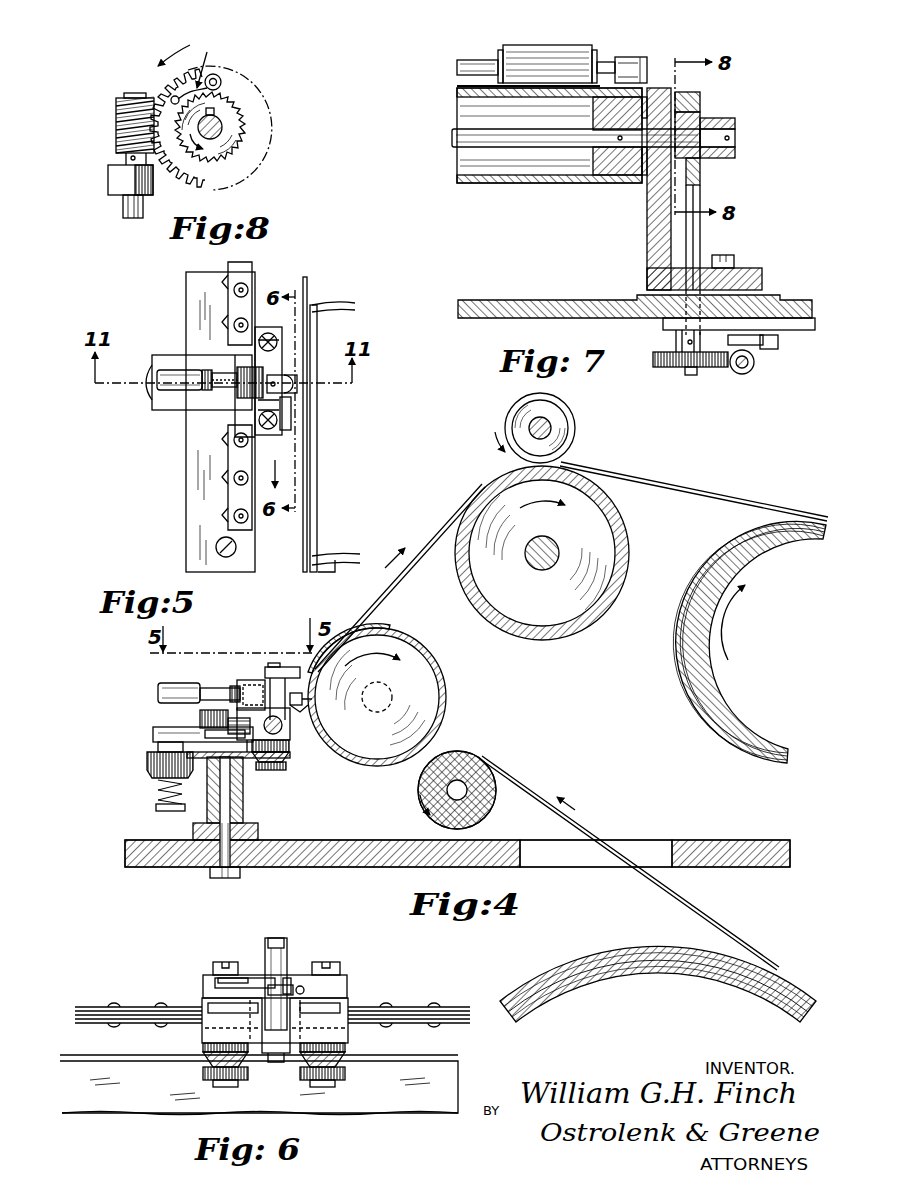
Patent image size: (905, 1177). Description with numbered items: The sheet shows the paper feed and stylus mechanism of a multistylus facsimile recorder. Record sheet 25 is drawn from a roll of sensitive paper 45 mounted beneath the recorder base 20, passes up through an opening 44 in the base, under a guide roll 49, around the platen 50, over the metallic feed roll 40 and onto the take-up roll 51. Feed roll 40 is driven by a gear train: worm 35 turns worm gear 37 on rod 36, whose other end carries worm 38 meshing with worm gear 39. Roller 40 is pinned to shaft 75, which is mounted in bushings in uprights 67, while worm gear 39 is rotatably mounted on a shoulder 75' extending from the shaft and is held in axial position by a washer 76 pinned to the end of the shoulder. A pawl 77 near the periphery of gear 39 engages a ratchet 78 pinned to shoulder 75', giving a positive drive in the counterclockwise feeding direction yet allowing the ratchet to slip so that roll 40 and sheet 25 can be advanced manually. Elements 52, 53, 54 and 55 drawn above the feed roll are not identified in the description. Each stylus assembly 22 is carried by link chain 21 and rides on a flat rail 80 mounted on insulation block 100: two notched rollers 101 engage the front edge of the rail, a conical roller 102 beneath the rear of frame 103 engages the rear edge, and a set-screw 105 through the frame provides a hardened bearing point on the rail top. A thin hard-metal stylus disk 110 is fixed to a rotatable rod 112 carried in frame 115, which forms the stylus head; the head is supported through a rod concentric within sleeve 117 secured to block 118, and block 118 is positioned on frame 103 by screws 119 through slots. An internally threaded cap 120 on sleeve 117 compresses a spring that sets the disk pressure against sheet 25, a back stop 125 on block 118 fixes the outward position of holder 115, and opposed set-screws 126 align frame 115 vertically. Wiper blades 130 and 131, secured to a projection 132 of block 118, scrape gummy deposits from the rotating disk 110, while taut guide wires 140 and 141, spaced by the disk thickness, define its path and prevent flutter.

In FIG. 7, the recorder base 20 is at (540, 312).
In FIG. 4, the recorder base 20 is at (703, 862).
In FIG. 5, the link chain 21 is at (248, 300).
In FIG. 4, the link chain 21 is at (232, 725).
In FIG. 6, the link chain 21 is at (110, 1007).
In FIG. 5, the stylus assembly 22 is at (185, 352).
In FIG. 4, the stylus assembly 22 is at (152, 721).
In FIG. 6, the stylus assembly 22 is at (352, 975).
In FIG. 7, the record sheet 25 is at (470, 89).
In FIG. 5, the record sheet 25 is at (338, 322).
In FIG. 4, the record sheet 25 is at (414, 539).
In FIG. 7, the worm 35 is at (754, 369).
In FIG. 8, the rod 36 is at (124, 209).
In FIG. 7, the rod 36 is at (700, 233).
In FIG. 7, the worm gear 37 is at (714, 367).
In FIG. 8, the worm 38 is at (118, 107).
In FIG. 8, the worm gear 39 is at (165, 83).
In FIG. 7, the worm gear 39 is at (700, 108).
In FIG. 7, the feed roll 40 is at (548, 184).
In FIG. 4, the feed roll 40 is at (622, 541).
In FIG. 4, the opening 44 is at (563, 858).
In FIG. 4, the roll of sensitive paper 45 is at (606, 957).
In FIG. 4, the guide roll 49 is at (480, 808).
In FIG. 5, the platen 50 is at (330, 574).
In FIG. 4, the platen 50 is at (437, 673).
In FIG. 4, the take-up roll 51 is at (712, 705).
In FIG. 7, the pressure roller 52 is at (548, 47).
In FIG. 4, the pressure roller 52 is at (507, 415).
In FIG. 4, the roller shaft 53 is at (552, 430).
In FIG. 7, the roller shaft 54 is at (606, 62).
In FIG. 7, the roller support block 55 is at (640, 63).
In FIG. 7, the uprights 67 is at (647, 228).
In FIG. 7, the shaft 75 is at (561, 126).
In FIG. 7, the shoulder 75' is at (736, 127).
In FIG. 7, the washer 76 is at (734, 154).
In FIG. 8, the pawl 77 is at (189, 69).
In FIG. 7, the pawl 77 is at (684, 96).
In FIG. 8, the ratchet 78 is at (232, 118).
In FIG. 7, the ratchet 78 is at (700, 172).
In FIG. 5, the rail 80 is at (200, 472).
In FIG. 4, the rail 80 is at (247, 760).
In FIG. 6, the rail 80 is at (452, 1054).
In FIG. 4, the insulation block 100 is at (207, 802).
In FIG. 6, the insulation block 100 is at (340, 1110).
In FIG. 4, the notched rollers 101 is at (290, 758).
In FIG. 6, the notched rollers 101 is at (203, 1073).
In FIG. 5, the conical roller 102 is at (150, 384).
In FIG. 4, the conical roller 102 is at (147, 762).
In FIG. 5, the frame 103 is at (167, 404).
In FIG. 4, the frame 103 is at (153, 734).
In FIG. 5, the set-screw 105 is at (210, 392).
In FIG. 4, the set-screw 105 is at (205, 721).
In FIG. 6, the set-screw 105 is at (276, 1062).
In FIG. 5, the stylus disk 110 is at (297, 378).
In FIG. 6, the stylus disk 110 is at (292, 988).
In FIG. 6, the stylus support rod 112 is at (270, 955).
In FIG. 6, the stylus head frame 115 is at (287, 980).
In FIG. 5, the sleeve 117 is at (218, 373).
In FIG. 4, the sleeve 117 is at (222, 688).
In FIG. 5, the block 118 is at (244, 390).
In FIG. 6, the block 118 is at (340, 1004).
In FIG. 5, the screws 119 is at (277, 342).
In FIG. 6, the screws 119 is at (218, 962).
In FIG. 5, the threaded cap 120 is at (172, 372).
In FIG. 4, the threaded cap 120 is at (190, 683).
In FIG. 6, the back stop 125 is at (304, 988).
In FIG. 6, the set-screws 126 is at (206, 1033).
In FIG. 5, the wiper blade 130 is at (292, 405).
In FIG. 6, the wiper blade 130 is at (260, 978).
In FIG. 6, the wiper blade 131 is at (215, 1005).
In FIG. 6, the projection 132 is at (218, 980).
In FIG. 5, the guide wire 140 is at (307, 291).
In FIG. 4, the guide wire 140 is at (302, 676).
In FIG. 4, the guide wire 141 is at (305, 700).